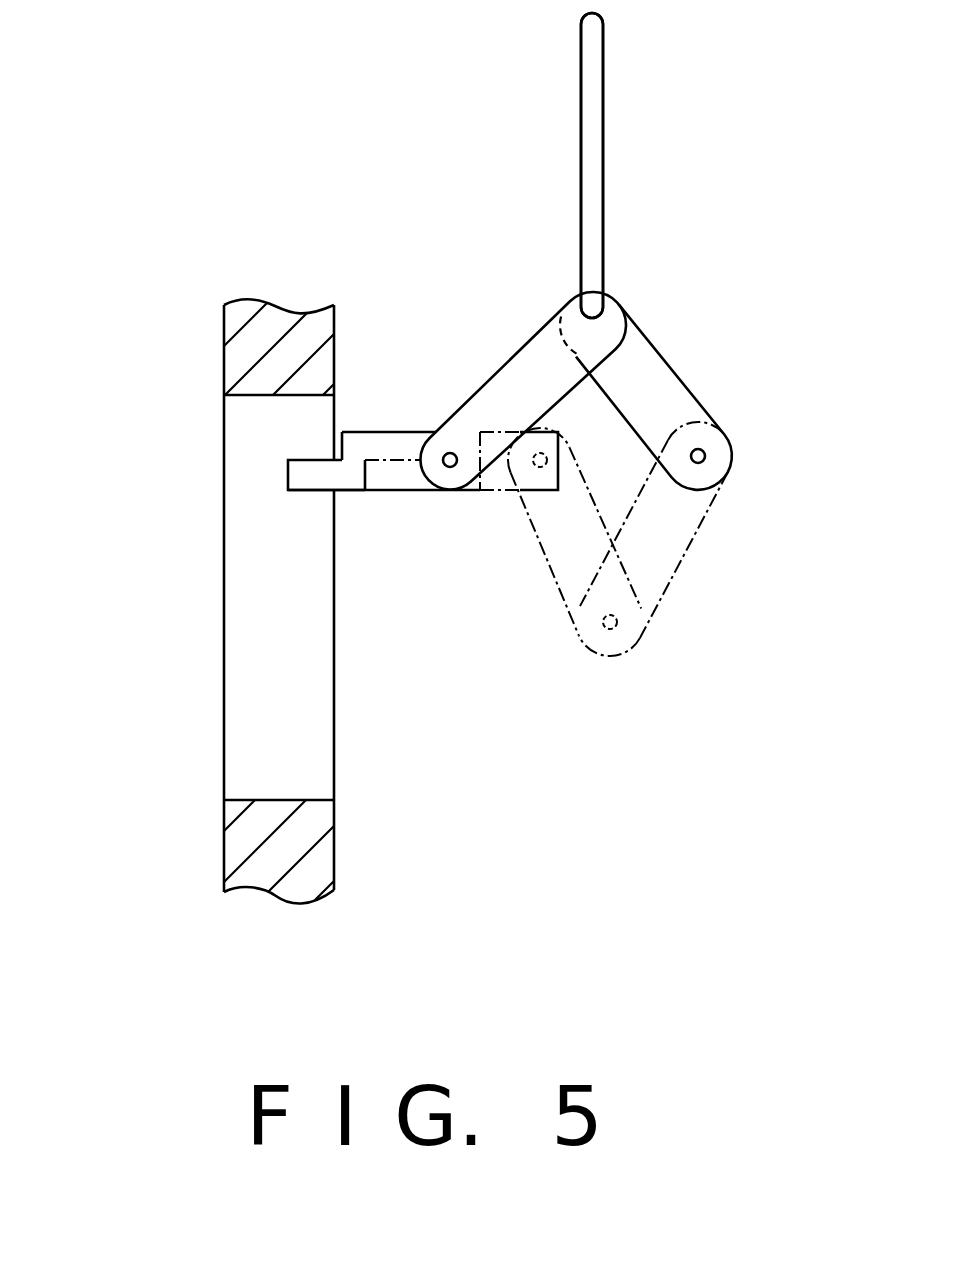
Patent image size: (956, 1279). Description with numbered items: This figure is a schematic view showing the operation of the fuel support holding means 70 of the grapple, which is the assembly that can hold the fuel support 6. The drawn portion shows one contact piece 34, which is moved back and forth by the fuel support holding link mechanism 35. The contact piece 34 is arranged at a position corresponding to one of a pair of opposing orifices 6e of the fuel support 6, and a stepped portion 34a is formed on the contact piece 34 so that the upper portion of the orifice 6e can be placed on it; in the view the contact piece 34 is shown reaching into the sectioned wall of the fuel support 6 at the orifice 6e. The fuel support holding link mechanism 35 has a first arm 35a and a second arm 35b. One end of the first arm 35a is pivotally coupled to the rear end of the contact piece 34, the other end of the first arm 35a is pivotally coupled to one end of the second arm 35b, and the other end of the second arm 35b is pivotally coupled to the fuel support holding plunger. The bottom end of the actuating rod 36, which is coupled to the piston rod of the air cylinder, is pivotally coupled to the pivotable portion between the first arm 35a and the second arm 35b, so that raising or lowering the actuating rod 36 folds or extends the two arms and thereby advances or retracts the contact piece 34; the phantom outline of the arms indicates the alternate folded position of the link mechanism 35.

The fuel support 6 is at (224, 378).
The orifice 6e is at (252, 619).
The contact piece 34 is at (388, 428).
The stepped portion 34a is at (318, 458).
The fuel support holding link mechanism 35 is at (655, 283).
The first arm 35a is at (497, 365).
The second arm 35b is at (684, 398).
The actuating rod 36 is at (603, 118).
The fuel support holding means 70 is at (552, 77).